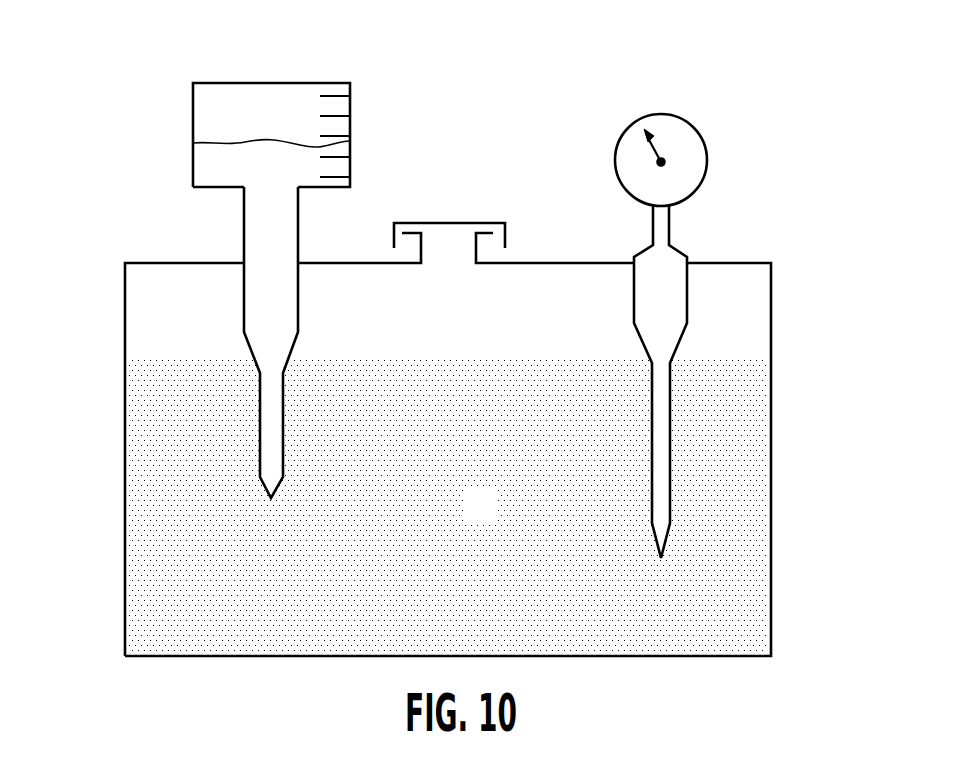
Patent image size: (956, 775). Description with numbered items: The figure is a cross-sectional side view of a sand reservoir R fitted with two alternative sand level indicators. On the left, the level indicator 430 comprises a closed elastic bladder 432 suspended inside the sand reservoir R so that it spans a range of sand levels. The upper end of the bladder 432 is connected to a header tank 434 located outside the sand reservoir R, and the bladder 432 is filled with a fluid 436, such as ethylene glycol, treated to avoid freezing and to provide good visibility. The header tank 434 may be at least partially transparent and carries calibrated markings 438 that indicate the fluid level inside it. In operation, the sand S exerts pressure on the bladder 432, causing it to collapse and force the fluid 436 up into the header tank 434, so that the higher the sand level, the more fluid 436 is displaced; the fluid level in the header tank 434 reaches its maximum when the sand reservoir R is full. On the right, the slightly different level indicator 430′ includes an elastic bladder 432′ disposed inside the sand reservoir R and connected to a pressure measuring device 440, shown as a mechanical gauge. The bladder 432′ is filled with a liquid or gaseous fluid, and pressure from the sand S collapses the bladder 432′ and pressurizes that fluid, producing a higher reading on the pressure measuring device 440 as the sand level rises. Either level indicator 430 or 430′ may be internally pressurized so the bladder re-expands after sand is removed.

The level indicator 430 is at (242, 255).
The level indicator 430′ is at (688, 308).
The elastic bladder 432 is at (243, 330).
The elastic bladder 432′ is at (688, 282).
The header tank 434 is at (303, 99).
The fluid 436 is at (268, 237).
The calibrated markings 438 is at (337, 95).
The pressure measuring device 440 is at (628, 130).
The sand reservoir R is at (759, 256).
The sand S is at (488, 518).